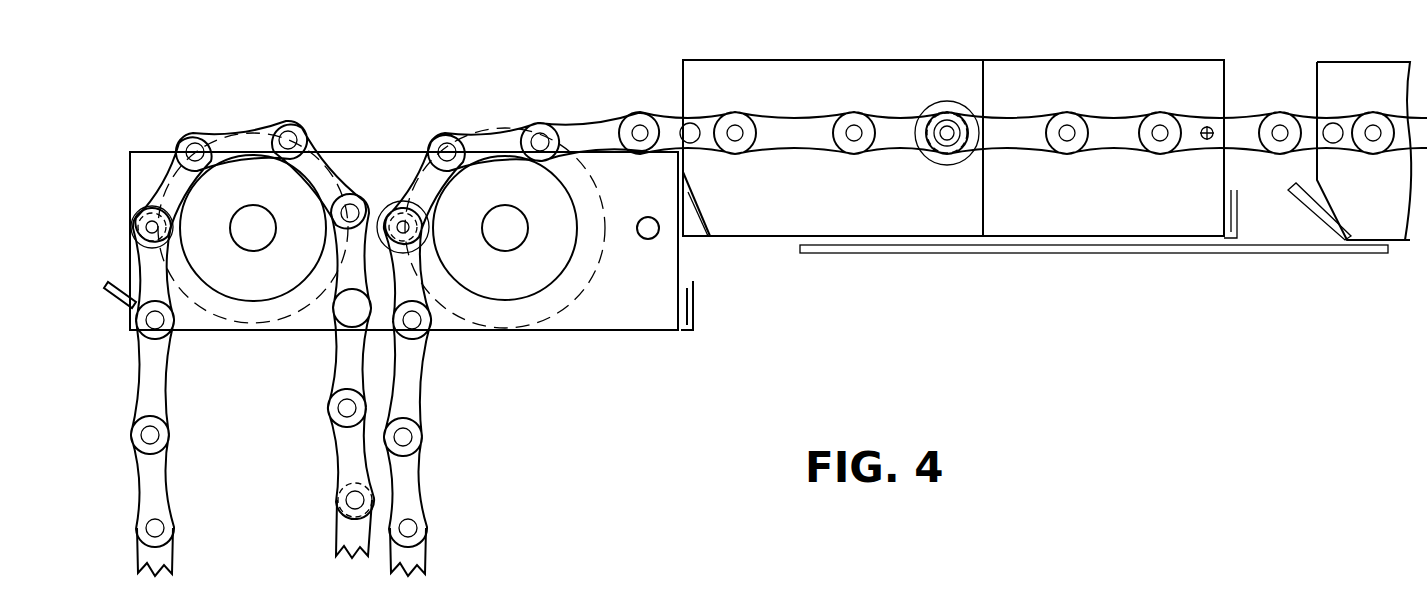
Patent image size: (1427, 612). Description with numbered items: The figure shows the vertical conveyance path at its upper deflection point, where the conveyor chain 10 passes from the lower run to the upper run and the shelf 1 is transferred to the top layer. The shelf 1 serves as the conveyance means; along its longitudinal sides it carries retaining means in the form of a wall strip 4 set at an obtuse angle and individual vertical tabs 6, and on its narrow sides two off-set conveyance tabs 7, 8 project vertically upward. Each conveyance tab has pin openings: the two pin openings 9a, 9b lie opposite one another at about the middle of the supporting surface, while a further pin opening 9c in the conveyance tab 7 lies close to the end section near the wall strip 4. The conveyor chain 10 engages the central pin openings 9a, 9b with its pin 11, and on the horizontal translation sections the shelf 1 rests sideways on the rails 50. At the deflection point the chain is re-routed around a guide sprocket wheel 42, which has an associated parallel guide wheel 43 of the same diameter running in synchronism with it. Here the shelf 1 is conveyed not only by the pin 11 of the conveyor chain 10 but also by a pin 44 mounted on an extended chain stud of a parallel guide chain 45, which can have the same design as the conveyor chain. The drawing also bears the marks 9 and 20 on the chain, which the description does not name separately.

The shelf 1 is at (1310, 52).
The wall strip 4 is at (125, 306).
The vertical tab 6 is at (697, 297).
The conveyance tab 7 is at (254, 303).
The conveyance tab 8 is at (602, 310).
The chain pin 9 is at (1214, 130).
The pin opening 9a is at (957, 100).
The pin opening 9b is at (657, 232).
The pin opening 9c is at (690, 126).
The conveyor chain 10 is at (585, 152).
The pin 11 is at (414, 205).
The roller 20 is at (360, 178).
The guide sprocket wheel 42 is at (487, 178).
The parallel guide wheel 43 is at (247, 182).
The pin 44 is at (148, 218).
The parallel guide chain 45 is at (162, 362).
The rail 50 is at (1135, 248).